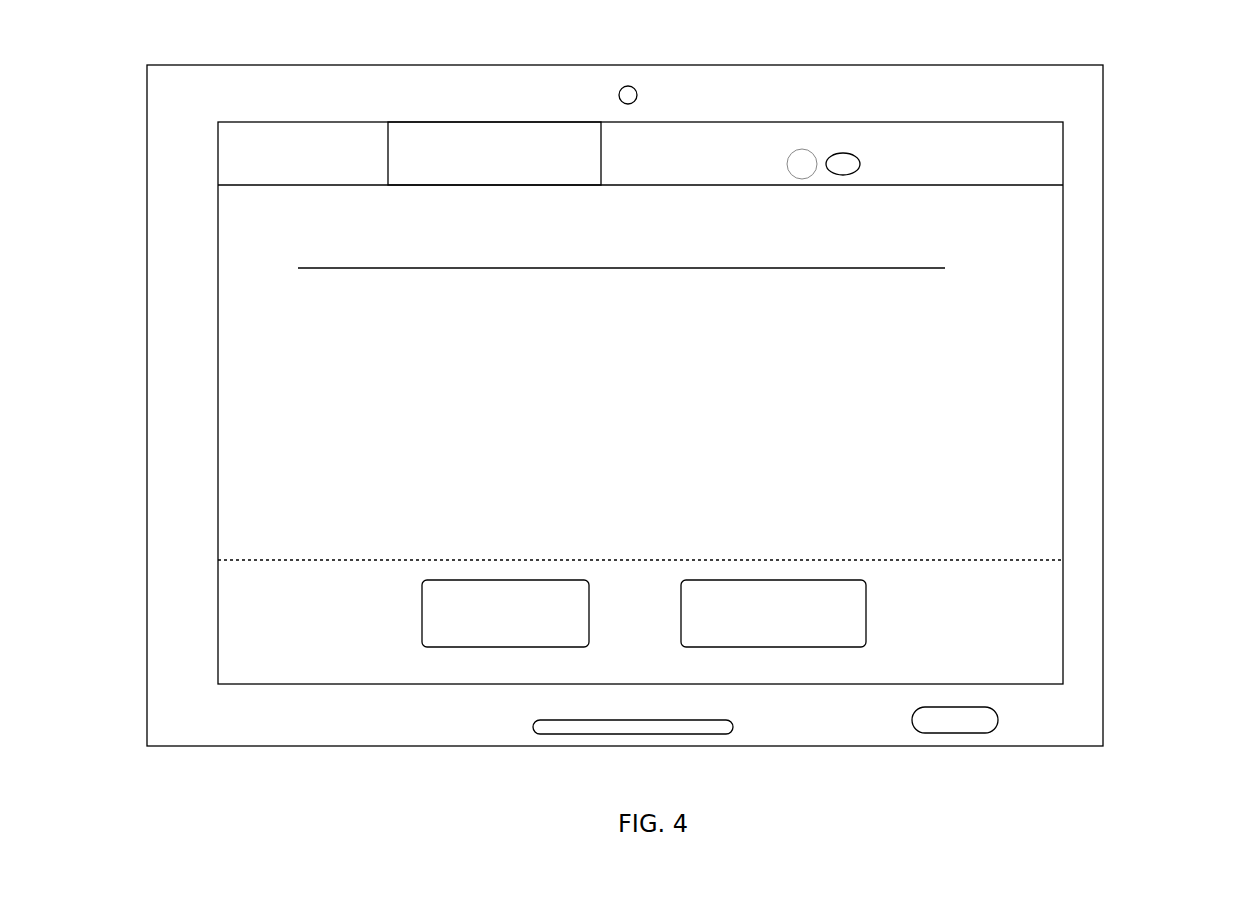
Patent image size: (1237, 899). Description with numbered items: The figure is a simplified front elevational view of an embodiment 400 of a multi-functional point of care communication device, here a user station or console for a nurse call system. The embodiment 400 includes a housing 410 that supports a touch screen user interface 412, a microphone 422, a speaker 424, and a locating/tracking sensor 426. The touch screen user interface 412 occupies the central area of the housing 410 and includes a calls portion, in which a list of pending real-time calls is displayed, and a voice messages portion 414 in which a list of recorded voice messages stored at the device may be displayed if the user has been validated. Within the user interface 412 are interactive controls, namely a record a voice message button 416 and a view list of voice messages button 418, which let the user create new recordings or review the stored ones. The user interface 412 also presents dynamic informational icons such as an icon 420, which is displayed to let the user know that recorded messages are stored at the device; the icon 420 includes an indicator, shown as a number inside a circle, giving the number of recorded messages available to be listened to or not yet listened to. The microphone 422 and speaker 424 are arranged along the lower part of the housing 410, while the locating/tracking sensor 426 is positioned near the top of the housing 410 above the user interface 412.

The embodiment of the device 400 is at (1165, 87).
The housing 410 is at (1103, 295).
The touch screen user interface 412 is at (287, 342).
The voice messages portion 414 is at (453, 148).
The record a voice message button 416 is at (589, 604).
The view list of voice messages button 418 is at (866, 604).
The icon 420 is at (842, 140).
The microphone 422 is at (545, 733).
The speaker 424 is at (912, 727).
The locating/tracking sensor 426 is at (635, 87).